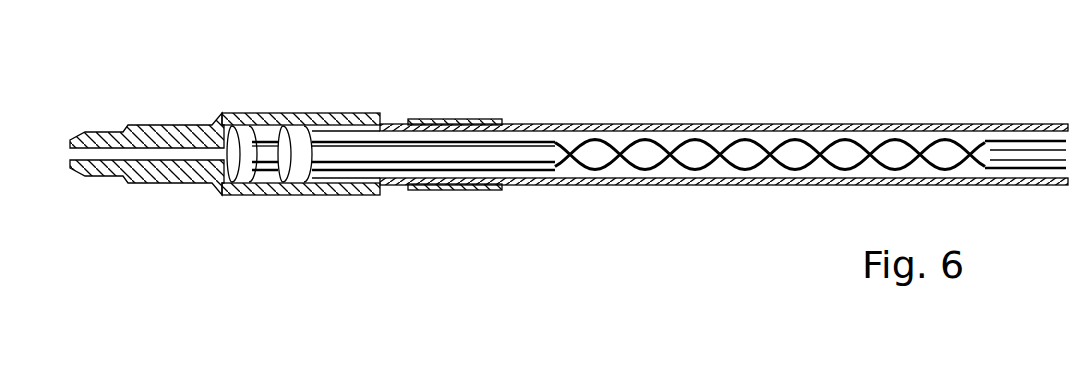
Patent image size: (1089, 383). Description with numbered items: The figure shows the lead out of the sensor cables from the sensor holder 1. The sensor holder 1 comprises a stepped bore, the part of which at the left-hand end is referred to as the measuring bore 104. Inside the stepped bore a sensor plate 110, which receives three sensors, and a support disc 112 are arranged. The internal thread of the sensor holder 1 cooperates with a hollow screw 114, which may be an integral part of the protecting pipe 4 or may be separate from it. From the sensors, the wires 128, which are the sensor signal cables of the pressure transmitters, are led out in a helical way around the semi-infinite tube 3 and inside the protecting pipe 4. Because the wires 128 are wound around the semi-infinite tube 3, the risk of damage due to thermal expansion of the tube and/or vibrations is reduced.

The measuring bore 104 is at (148, 153).
The sensor holder 1 is at (185, 133).
The sensor plate 110 is at (232, 132).
The support disc 112 is at (293, 133).
The hollow screw 114 is at (394, 126).
The protecting pipe 4 is at (542, 126).
The semi-infinite tube 3 is at (552, 162).
The wires 128 is at (782, 142).